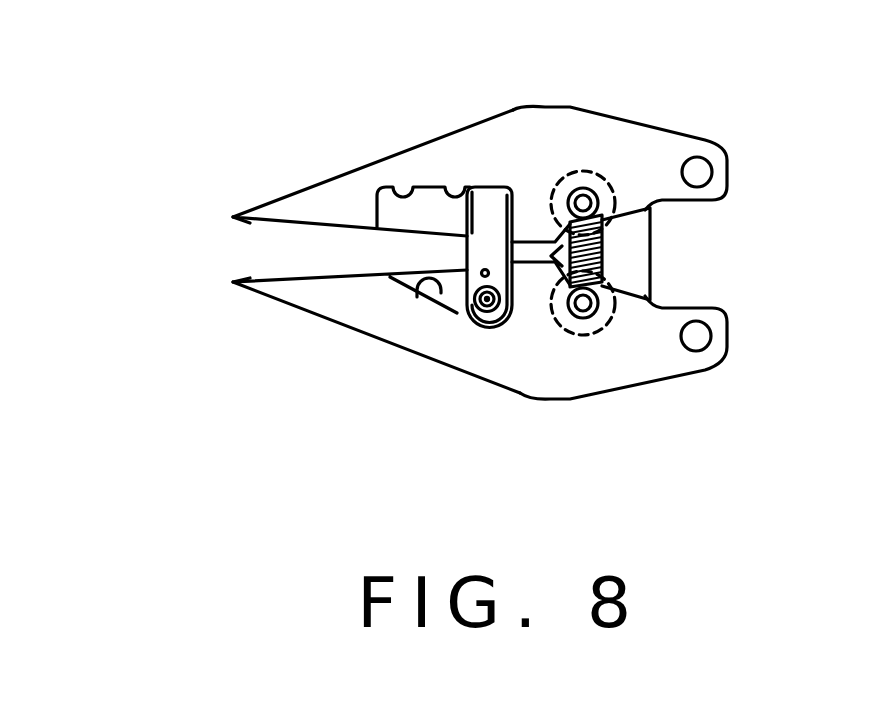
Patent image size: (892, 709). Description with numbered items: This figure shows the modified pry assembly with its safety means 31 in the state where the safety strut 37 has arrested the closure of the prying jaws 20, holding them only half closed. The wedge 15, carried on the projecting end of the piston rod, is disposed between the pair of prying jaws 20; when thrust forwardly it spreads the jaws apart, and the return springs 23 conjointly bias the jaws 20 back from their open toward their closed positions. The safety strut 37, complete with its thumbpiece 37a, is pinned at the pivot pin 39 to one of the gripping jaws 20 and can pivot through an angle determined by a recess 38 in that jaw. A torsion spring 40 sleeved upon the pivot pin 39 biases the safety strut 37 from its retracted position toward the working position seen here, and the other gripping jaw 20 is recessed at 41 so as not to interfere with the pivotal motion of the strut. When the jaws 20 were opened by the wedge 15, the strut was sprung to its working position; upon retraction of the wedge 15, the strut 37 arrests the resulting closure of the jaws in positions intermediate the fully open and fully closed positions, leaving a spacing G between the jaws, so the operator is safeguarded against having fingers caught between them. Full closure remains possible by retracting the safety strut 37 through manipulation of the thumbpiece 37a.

The spacing G is at (250, 247).
The recess 41 is at (393, 187).
The prying jaws 20 is at (567, 133).
The thumbpiece 37a is at (453, 197).
The safety strut 37 is at (488, 205).
The pivot pin 39 is at (490, 313).
The torsion spring 40 is at (500, 397).
The recess 38 is at (437, 302).
The safety means 31 is at (515, 182).
The return springs 23 is at (606, 263).
The wedge 15 is at (640, 246).